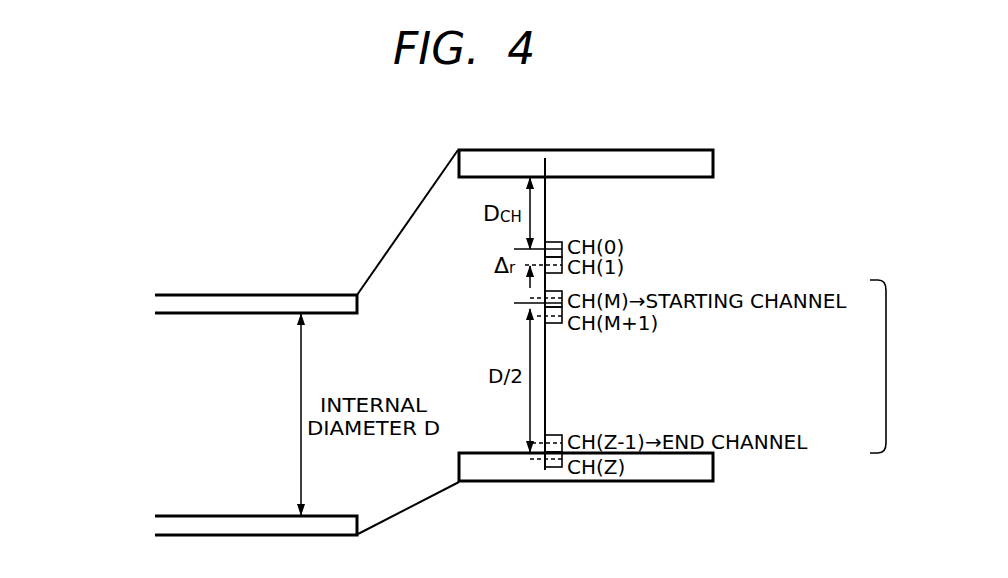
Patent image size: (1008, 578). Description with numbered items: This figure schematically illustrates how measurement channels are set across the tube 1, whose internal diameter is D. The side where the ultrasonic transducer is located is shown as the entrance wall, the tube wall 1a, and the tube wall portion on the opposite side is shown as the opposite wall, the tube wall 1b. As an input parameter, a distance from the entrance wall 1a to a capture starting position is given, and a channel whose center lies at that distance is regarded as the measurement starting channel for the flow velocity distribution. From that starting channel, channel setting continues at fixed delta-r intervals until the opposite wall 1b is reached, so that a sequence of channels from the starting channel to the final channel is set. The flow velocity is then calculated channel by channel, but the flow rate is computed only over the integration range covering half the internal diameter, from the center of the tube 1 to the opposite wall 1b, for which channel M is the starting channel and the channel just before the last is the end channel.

The tube 1 is at (98, 394).
The tube wall (entrance wall) 1a is at (155, 302).
The tube wall (opposite wall) 1b is at (155, 520).